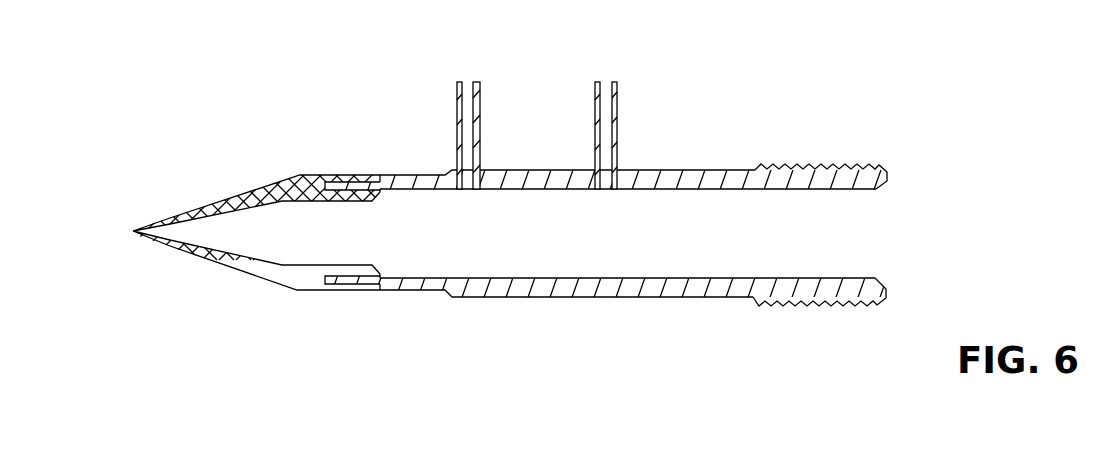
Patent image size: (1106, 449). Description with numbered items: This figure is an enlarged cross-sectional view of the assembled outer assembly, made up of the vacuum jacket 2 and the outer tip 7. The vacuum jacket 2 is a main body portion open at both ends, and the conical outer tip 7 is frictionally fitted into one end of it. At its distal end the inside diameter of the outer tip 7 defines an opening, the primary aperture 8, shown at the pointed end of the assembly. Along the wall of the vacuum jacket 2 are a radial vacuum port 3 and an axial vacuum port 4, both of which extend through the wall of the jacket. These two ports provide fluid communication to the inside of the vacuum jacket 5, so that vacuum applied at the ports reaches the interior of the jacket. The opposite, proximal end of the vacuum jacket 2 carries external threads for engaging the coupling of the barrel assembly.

The vacuum jacket 2 is at (590, 282).
The radial vacuum port 3 is at (473, 83).
The axial vacuum port 4 is at (613, 85).
The inside of vacuum jacket 5 is at (855, 278).
The outer tip 7 is at (252, 199).
The primary aperture 8 is at (133, 231).